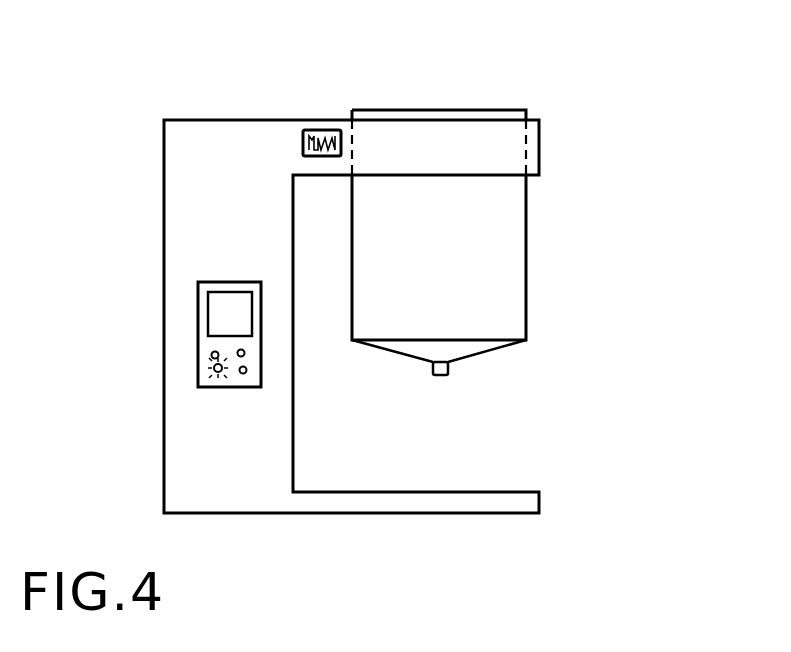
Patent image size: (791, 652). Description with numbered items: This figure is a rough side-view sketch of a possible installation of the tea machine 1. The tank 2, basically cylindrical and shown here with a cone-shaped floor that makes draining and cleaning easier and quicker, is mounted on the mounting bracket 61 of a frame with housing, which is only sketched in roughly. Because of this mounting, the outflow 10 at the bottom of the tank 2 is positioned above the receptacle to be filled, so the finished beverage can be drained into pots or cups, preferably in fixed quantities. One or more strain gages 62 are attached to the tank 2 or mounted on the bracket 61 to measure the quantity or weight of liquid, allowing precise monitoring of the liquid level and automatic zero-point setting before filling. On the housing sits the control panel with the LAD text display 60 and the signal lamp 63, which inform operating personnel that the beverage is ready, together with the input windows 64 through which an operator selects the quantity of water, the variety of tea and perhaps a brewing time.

The tea machine 1 is at (593, 128).
The tank 2 is at (528, 233).
The outflow 10 is at (448, 368).
The LAD text display 60 is at (225, 312).
The mounting bracket 61 is at (333, 105).
The strain gages 62 is at (303, 130).
The signal lamp 63 is at (210, 374).
The input windows 64 is at (243, 387).